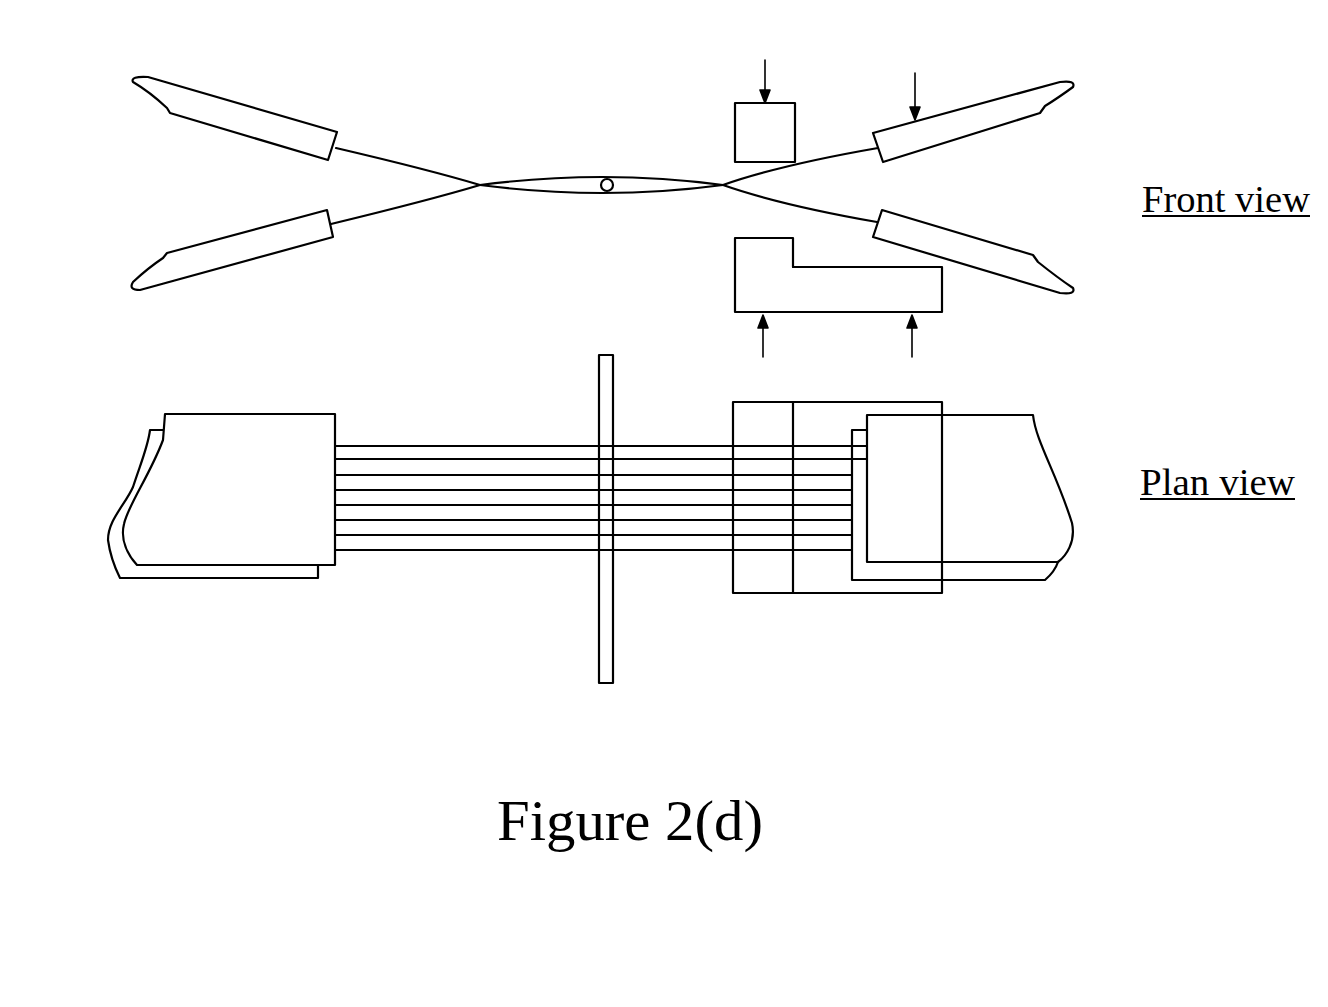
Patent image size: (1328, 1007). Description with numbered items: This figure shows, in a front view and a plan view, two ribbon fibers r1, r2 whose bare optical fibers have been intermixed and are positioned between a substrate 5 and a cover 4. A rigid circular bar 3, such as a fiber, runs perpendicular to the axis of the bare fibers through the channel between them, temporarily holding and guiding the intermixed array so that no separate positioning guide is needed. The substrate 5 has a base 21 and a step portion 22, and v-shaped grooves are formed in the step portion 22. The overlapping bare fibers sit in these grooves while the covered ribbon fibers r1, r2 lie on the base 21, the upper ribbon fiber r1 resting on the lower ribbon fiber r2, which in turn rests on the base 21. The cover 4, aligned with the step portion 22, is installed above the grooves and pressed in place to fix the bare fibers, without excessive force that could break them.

The rigid circular bar 3 is at (597, 623).
The cover 4 is at (702, 640).
The substrate 5 is at (827, 462).
The base 21 is at (943, 297).
The step portion 22 is at (750, 252).
The upper ribbon fiber r1 is at (988, 94).
The lower ribbon fiber r2 is at (988, 229).